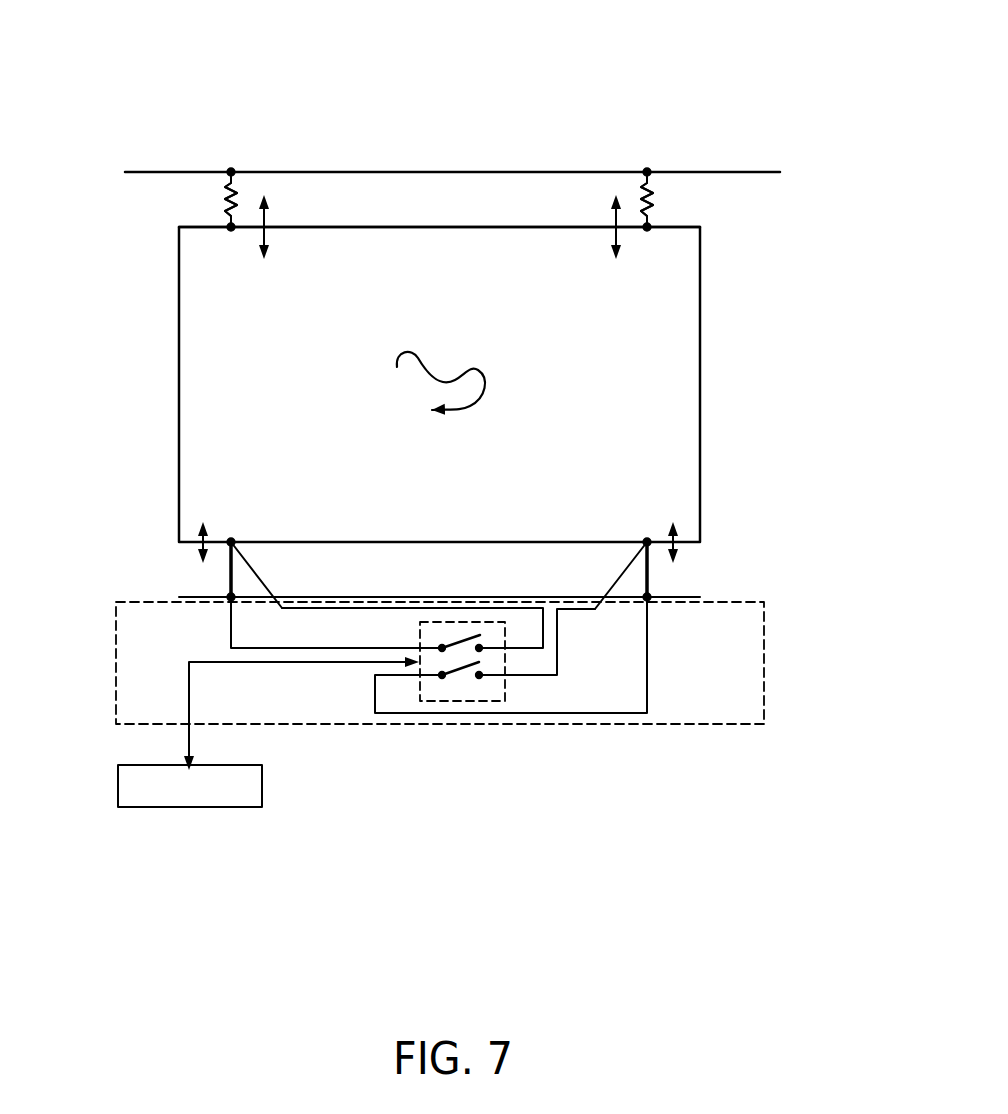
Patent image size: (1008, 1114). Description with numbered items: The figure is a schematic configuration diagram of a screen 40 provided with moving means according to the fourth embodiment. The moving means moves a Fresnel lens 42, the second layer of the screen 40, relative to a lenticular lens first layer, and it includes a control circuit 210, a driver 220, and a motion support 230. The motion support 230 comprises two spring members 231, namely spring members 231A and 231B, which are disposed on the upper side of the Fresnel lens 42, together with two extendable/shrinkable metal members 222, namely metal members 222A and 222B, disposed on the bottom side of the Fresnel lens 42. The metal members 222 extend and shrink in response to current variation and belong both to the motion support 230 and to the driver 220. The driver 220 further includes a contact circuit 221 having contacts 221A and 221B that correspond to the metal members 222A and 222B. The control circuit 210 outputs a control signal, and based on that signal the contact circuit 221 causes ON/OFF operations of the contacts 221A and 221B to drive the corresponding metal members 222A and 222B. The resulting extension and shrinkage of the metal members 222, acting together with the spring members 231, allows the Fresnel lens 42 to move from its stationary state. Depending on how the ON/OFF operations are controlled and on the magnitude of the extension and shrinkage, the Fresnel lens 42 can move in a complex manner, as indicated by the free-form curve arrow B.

The screen 40 is at (444, 95).
The Fresnel lens 42 is at (441, 226).
The motion support 230 is at (295, 58).
The spring member 231 is at (257, 122).
The spring member 231A is at (240, 201).
The spring member 231B is at (641, 201).
The driver 220 is at (764, 626).
The extendable/shrinkable metal member 222 is at (258, 478).
The extendable/shrinkable metal member 222A is at (233, 577).
The extendable/shrinkable metal member 222B is at (644, 577).
The contact circuit 221 is at (505, 688).
The contact 221A is at (457, 637).
The contact 221B is at (462, 667).
The control circuit 210 is at (262, 783).
The free-form curve arrow B is at (481, 372).